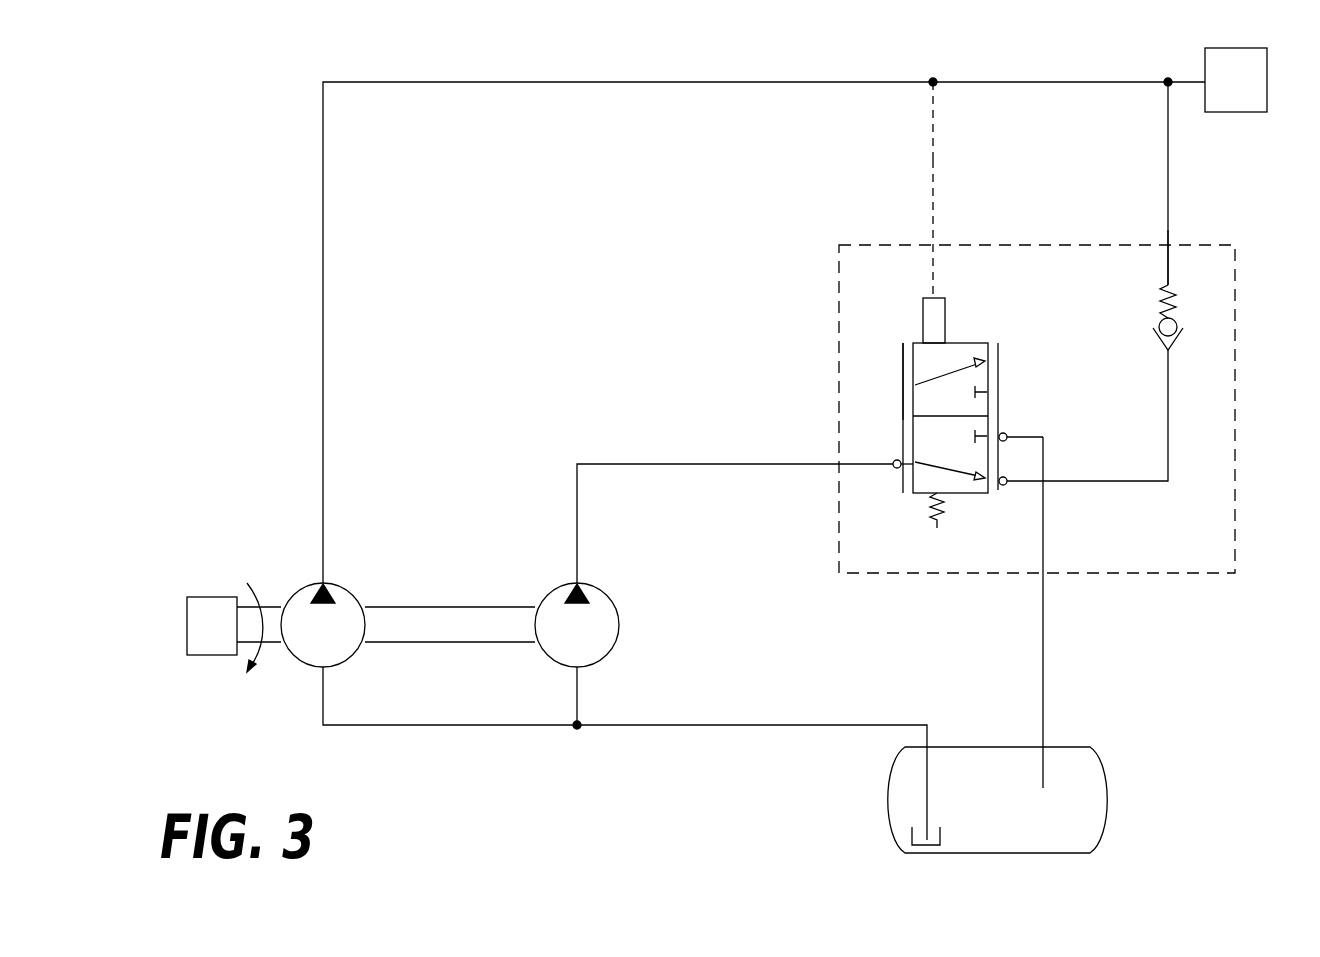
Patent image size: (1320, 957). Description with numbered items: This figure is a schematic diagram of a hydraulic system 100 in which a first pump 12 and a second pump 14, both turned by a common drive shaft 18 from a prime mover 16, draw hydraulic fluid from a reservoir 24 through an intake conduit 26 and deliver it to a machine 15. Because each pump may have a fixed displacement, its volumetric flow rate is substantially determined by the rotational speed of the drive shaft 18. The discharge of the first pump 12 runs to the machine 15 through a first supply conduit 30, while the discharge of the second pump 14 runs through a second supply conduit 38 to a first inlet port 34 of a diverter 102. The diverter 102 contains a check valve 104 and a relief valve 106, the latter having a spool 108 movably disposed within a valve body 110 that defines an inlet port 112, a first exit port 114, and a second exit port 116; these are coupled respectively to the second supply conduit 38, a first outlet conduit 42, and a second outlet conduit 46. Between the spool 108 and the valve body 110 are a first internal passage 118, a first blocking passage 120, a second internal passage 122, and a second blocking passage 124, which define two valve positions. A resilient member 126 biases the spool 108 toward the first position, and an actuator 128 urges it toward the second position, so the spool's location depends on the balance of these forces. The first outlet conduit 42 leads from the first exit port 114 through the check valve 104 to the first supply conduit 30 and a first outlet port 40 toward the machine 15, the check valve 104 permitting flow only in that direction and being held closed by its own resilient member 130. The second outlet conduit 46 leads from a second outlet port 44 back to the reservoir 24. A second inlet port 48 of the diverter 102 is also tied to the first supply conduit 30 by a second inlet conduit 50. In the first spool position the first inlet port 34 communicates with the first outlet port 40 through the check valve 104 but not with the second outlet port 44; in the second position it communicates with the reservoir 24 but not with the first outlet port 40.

The first pump 12 is at (343, 583).
The second pump 14 is at (619, 645).
The machine 15 is at (1236, 80).
The engine 16 is at (234, 627).
The drive shaft 18 is at (405, 607).
The reservoir 24 is at (1106, 787).
The intake conduit 26 is at (760, 727).
The first supply conduit 30 is at (323, 355).
The first inlet port 34 is at (838, 464).
The second supply conduit 38 is at (650, 464).
The first outlet port 40 is at (1167, 243).
The first outlet conduit 42 is at (1167, 142).
The second outlet port 44 is at (1045, 575).
The second outlet conduit 46 is at (1043, 632).
The second inlet port 48 is at (935, 243).
The second inlet conduit 50 is at (933, 155).
The hydraulic system 100 is at (628, 790).
The diverter 102 is at (838, 290).
The check valve 104 is at (1186, 338).
The relief valve 106 is at (964, 337).
The spool 108 is at (913, 404).
The valve body 110 is at (903, 366).
The inlet port 112 is at (894, 468).
The first exit port 114 is at (1007, 483).
The second exit port 116 is at (1007, 437).
The first internal passage 118 is at (978, 476).
The first blocking passage 120 is at (977, 434).
The second internal passage 122 is at (962, 367).
The second blocking passage 124 is at (977, 390).
The resilient member 126 is at (937, 520).
The actuator 128 is at (923, 318).
The resilient member 130 is at (1176, 305).